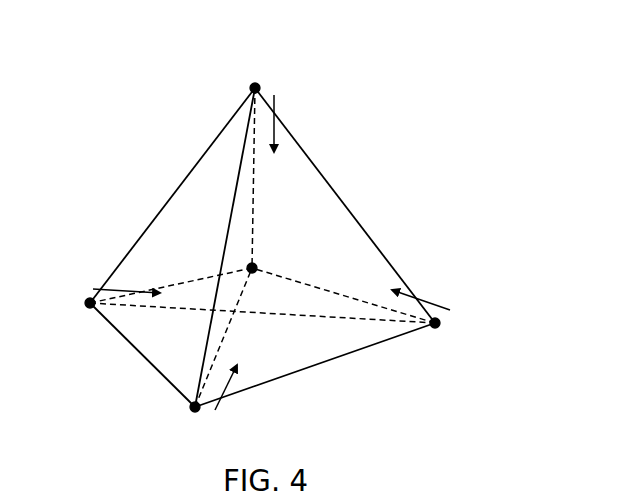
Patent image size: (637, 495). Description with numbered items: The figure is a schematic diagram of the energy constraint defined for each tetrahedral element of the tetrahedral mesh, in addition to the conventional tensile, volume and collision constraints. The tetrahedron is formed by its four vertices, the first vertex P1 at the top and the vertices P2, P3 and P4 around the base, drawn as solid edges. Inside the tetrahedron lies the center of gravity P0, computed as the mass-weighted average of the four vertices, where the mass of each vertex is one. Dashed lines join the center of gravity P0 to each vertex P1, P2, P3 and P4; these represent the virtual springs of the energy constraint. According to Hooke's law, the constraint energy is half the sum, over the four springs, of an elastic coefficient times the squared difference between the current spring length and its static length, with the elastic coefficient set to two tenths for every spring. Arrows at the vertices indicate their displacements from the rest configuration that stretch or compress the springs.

The center of gravity P0 is at (271, 257).
The tetrahedron vertex P1 is at (260, 76).
The tetrahedron vertex P2 is at (75, 310).
The tetrahedron vertex P3 is at (195, 427).
The tetrahedron vertex P4 is at (453, 334).